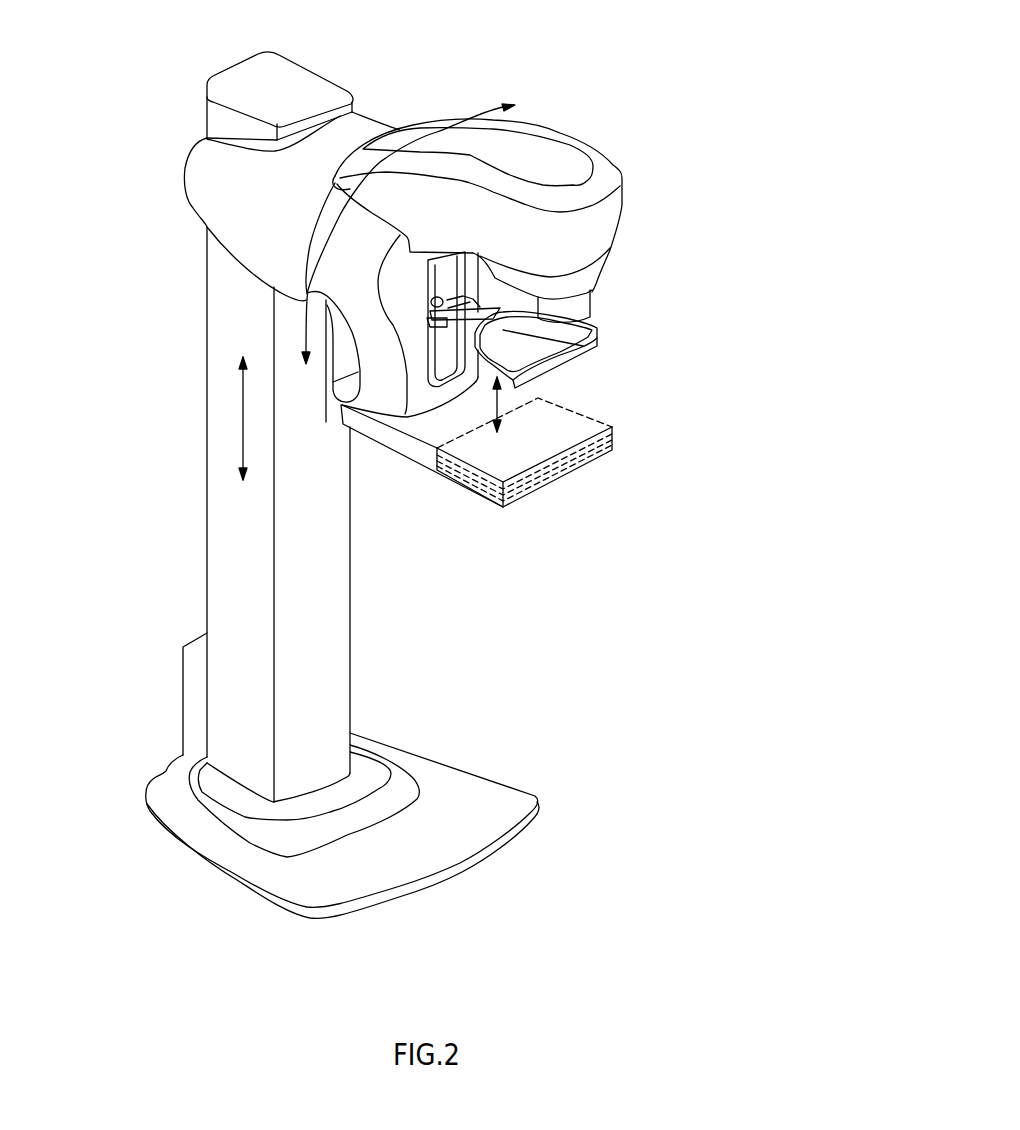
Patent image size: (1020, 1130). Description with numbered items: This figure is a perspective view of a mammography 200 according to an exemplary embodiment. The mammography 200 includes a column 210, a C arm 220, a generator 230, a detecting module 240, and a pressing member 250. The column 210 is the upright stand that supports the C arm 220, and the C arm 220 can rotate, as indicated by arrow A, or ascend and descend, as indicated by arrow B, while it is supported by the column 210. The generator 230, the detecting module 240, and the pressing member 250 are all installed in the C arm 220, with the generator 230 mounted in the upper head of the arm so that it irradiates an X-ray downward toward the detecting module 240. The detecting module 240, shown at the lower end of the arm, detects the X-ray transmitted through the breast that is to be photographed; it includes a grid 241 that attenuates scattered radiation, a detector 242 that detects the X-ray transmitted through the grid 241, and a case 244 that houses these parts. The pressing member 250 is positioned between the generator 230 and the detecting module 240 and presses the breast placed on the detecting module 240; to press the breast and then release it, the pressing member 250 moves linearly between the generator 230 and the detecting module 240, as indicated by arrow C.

The mammography 200 is at (433, 460).
The column 210 is at (207, 345).
The C arm 220 is at (610, 215).
The generator 230 is at (595, 302).
The detecting module 240 is at (542, 461).
The grid 241 is at (617, 433).
The detector 242 is at (617, 447).
The case 244 is at (587, 467).
The pressing member 250 is at (583, 348).